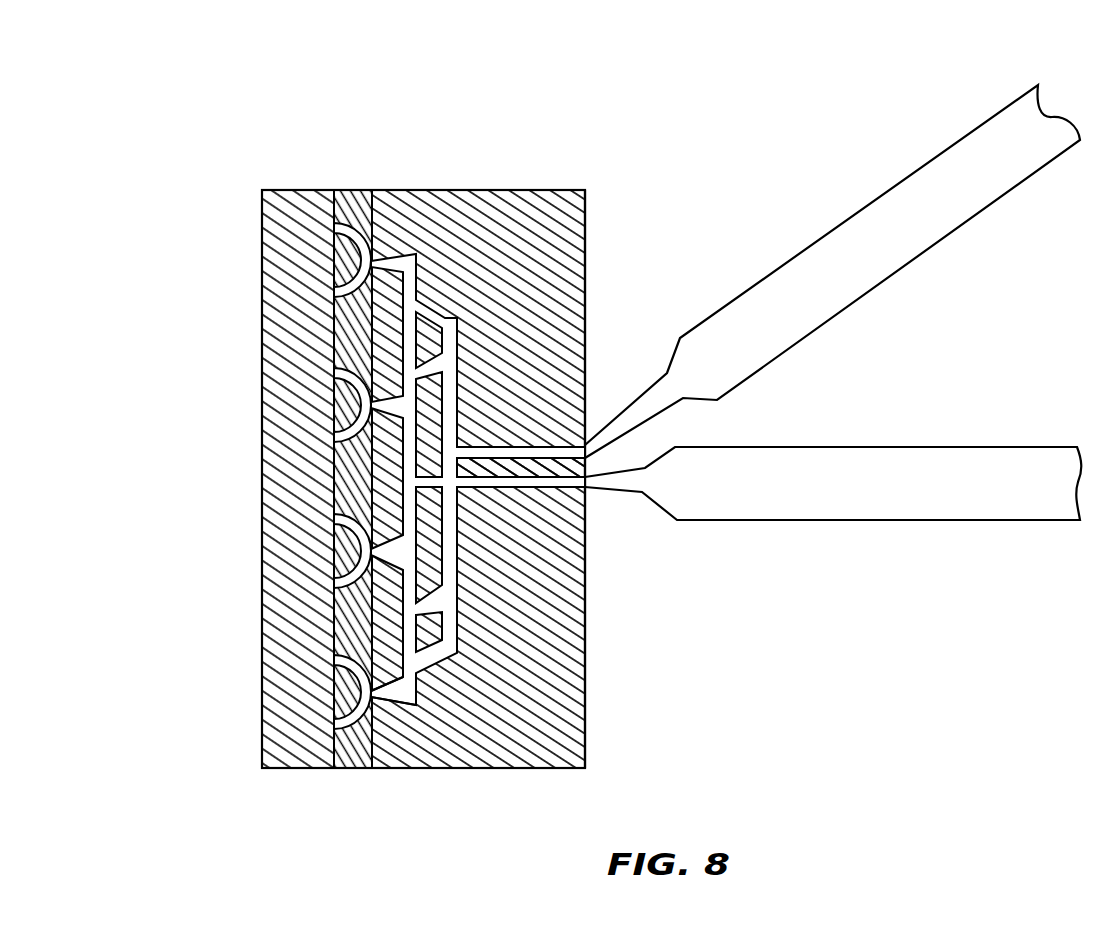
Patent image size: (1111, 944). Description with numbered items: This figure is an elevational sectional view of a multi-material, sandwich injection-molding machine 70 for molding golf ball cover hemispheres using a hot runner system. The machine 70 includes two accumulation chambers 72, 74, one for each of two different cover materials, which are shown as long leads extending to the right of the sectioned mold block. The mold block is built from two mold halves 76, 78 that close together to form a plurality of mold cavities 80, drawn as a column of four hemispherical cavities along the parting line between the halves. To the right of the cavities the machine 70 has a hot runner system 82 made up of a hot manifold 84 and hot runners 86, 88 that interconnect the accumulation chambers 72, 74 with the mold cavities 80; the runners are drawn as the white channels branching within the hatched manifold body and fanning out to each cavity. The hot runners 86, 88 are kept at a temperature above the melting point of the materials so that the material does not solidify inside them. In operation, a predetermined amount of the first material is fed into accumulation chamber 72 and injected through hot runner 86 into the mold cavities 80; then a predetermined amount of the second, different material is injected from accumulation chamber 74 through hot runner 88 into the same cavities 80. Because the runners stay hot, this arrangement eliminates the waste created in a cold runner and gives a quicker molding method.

The sandwich injection-molding machine 70 is at (147, 118).
The accumulation chamber 72 is at (745, 292).
The accumulation chamber 74 is at (830, 448).
The mold half 76 is at (295, 768).
The mold half 78 is at (347, 768).
The mold cavities 80 is at (356, 270).
The hot runner system 82 is at (432, 189).
The hot manifold 84 is at (586, 272).
The hot runner 86 is at (450, 555).
The hot runner 88 is at (372, 696).